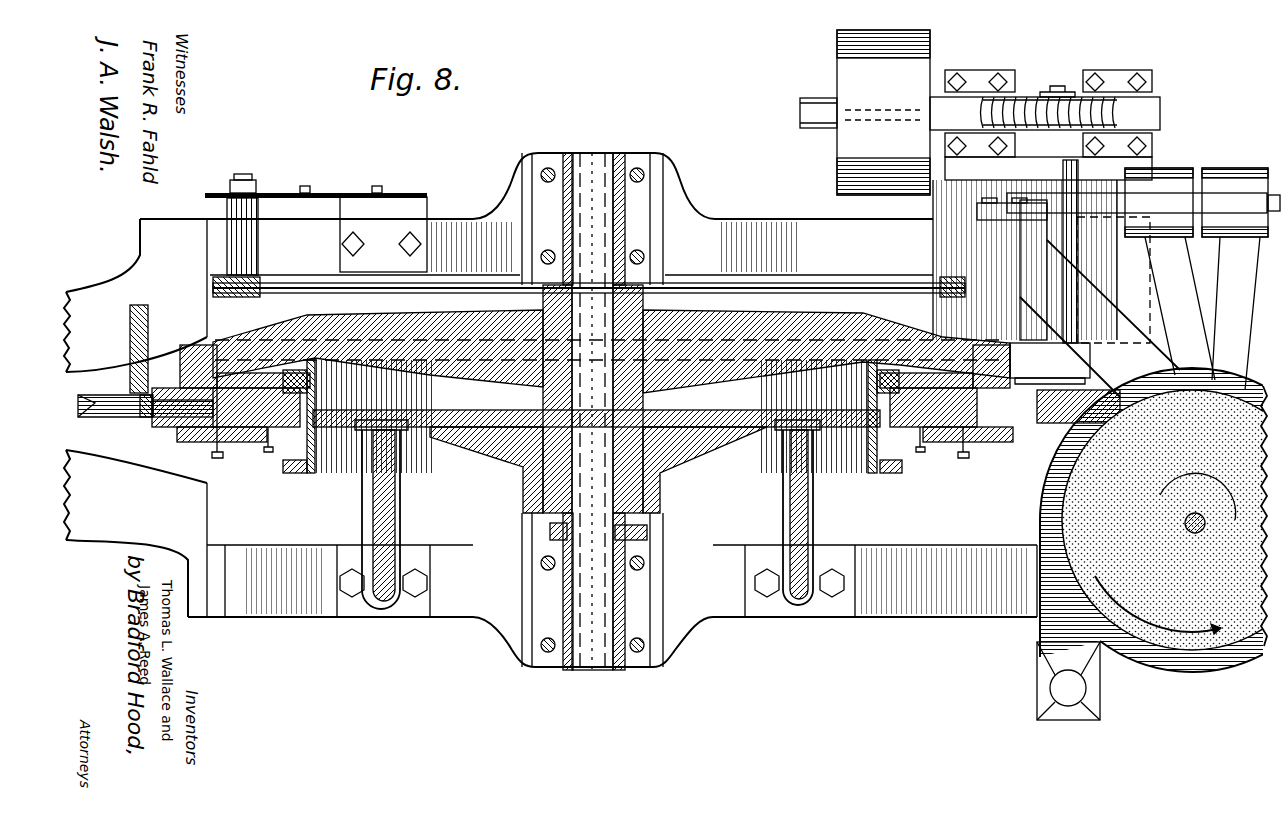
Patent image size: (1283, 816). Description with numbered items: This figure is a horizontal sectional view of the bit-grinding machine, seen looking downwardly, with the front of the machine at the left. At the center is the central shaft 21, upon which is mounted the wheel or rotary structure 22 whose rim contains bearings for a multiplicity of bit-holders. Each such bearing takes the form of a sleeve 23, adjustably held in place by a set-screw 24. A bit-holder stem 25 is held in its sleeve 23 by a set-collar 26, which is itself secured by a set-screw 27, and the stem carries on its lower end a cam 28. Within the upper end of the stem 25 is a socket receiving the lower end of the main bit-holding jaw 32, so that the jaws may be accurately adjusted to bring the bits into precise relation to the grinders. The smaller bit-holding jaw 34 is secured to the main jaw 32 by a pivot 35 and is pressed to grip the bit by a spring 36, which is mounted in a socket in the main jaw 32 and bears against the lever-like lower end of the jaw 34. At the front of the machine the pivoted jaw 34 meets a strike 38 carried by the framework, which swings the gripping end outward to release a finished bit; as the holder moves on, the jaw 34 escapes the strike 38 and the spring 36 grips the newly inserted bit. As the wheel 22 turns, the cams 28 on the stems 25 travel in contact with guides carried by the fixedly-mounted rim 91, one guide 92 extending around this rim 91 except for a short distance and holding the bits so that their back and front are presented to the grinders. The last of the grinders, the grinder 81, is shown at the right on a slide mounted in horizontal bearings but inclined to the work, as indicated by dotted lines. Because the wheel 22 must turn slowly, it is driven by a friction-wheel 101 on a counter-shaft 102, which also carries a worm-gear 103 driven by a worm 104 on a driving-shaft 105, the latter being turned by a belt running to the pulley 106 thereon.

The central shaft 21 is at (599, 162).
The wheel or rotary structure 22 is at (320, 315).
The sleeve 23 is at (250, 430).
The set-screw 24 is at (217, 455).
The stem 25 is at (200, 428).
The set-collar 26 is at (915, 372).
The set-screw 27 is at (290, 467).
The cam 28 is at (320, 468).
The main bit-holding jaw 32 is at (102, 418).
The smaller bit-holding jaw 34 is at (110, 402).
The pivot 35 is at (112, 405).
The spring 36 is at (150, 407).
The strike 38 is at (148, 372).
The grinder 81 is at (1210, 643).
The fixedly-mounted rim 91 is at (440, 463).
The guide 92 is at (293, 370).
The friction-wheel 101 is at (1050, 363).
The counter-shaft 102 is at (1057, 93).
The worm-gear 103 is at (1122, 107).
The worm 104 is at (1070, 96).
The driving-shaft 105 is at (808, 108).
The pulley 106 is at (883, 112).